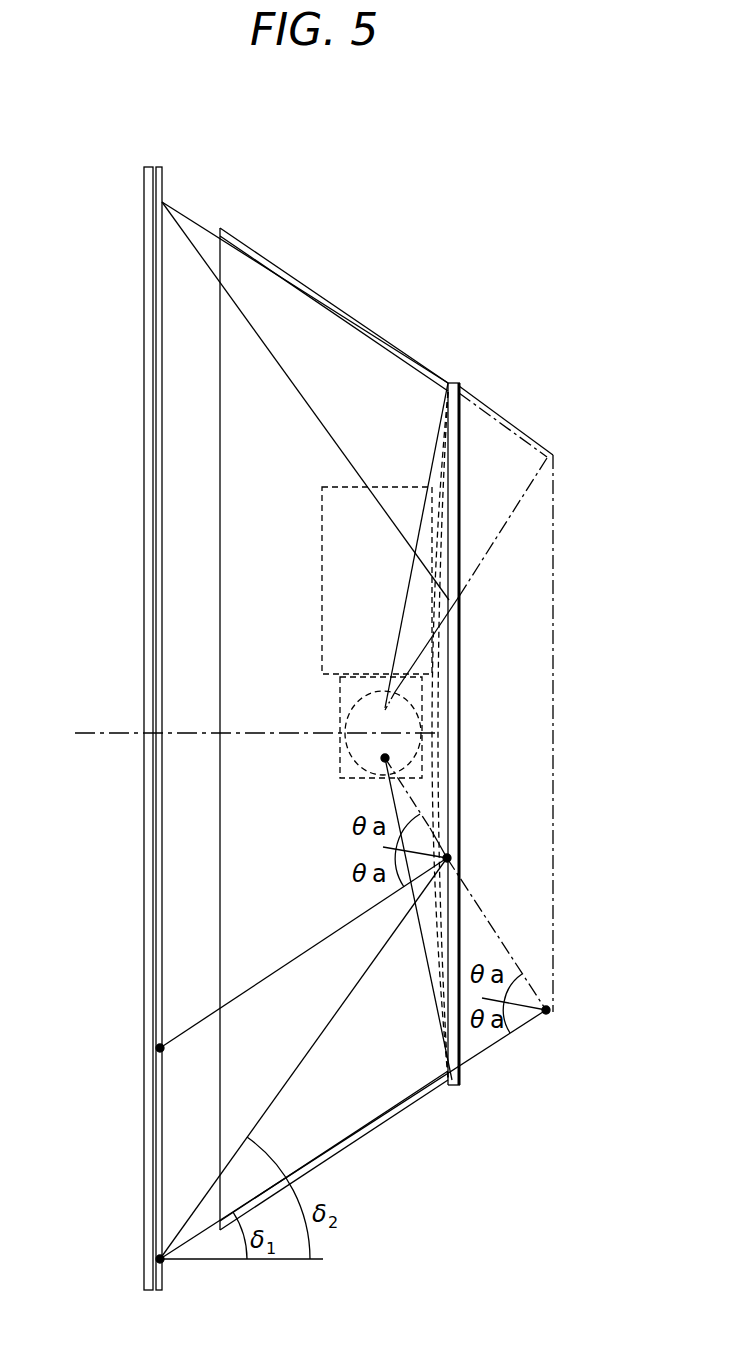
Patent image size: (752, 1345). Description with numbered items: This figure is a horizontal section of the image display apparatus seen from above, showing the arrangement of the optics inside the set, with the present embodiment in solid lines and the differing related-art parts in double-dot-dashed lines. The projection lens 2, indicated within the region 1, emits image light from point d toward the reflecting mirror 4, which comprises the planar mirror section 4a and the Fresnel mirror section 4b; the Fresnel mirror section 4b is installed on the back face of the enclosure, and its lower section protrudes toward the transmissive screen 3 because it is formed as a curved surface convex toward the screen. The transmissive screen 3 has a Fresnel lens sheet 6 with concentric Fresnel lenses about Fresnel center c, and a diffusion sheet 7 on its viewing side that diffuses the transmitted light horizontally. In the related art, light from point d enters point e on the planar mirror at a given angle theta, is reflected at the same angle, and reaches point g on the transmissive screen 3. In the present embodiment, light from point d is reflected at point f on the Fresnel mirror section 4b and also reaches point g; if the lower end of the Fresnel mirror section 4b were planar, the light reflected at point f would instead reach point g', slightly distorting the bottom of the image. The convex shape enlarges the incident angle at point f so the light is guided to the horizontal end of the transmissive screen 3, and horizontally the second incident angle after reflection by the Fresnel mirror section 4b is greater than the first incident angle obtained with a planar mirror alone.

The light source unit region 1 is at (388, 487).
The projection lens 2 is at (405, 692).
The transmissive screen 3 is at (170, 162).
The reflecting mirror 4 is at (420, 368).
The planar mirror section 4a is at (290, 318).
The Fresnel mirror section 4b is at (434, 752).
The Fresnel lens sheet 6 is at (163, 193).
The diffusion sheet 7 is at (145, 194).
The Fresnel center c is at (142, 733).
The point d on the projection lens d is at (385, 758).
The point e on the planar mirror section e is at (548, 1012).
The point f on the Fresnel mirror section f is at (455, 856).
The point g on the transmissive screen g is at (115, 1266).
The point g' on the transmissive screen g' is at (121, 1051).